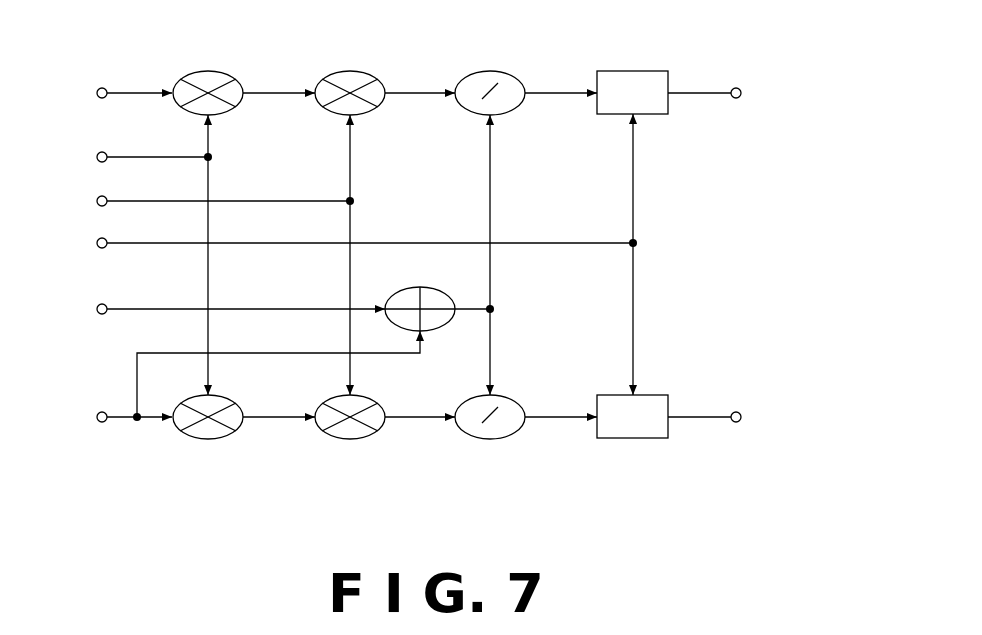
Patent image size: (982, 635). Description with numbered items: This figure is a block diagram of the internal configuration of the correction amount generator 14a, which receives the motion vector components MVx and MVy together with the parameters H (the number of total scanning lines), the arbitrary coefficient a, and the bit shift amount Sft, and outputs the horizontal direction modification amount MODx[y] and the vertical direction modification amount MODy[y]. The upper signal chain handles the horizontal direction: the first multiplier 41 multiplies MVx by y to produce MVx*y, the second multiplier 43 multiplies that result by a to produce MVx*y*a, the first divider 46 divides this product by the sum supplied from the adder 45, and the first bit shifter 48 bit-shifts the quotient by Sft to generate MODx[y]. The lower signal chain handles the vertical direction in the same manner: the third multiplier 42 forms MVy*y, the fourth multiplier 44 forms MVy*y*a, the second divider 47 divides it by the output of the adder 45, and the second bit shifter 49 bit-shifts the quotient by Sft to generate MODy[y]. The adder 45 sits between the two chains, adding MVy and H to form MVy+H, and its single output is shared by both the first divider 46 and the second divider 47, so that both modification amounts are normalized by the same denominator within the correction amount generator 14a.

The correction amount generator 14a is at (441, 278).
The first multiplier 41 is at (208, 70).
The third multiplier 42 is at (206, 440).
The second multiplier 43 is at (349, 70).
The fourth multiplier 44 is at (346, 440).
The adder 45 is at (436, 288).
The first divider 46 is at (488, 70).
The second divider 47 is at (490, 440).
The first bit shifter 48 is at (627, 70).
The second bit shifter 49 is at (633, 440).